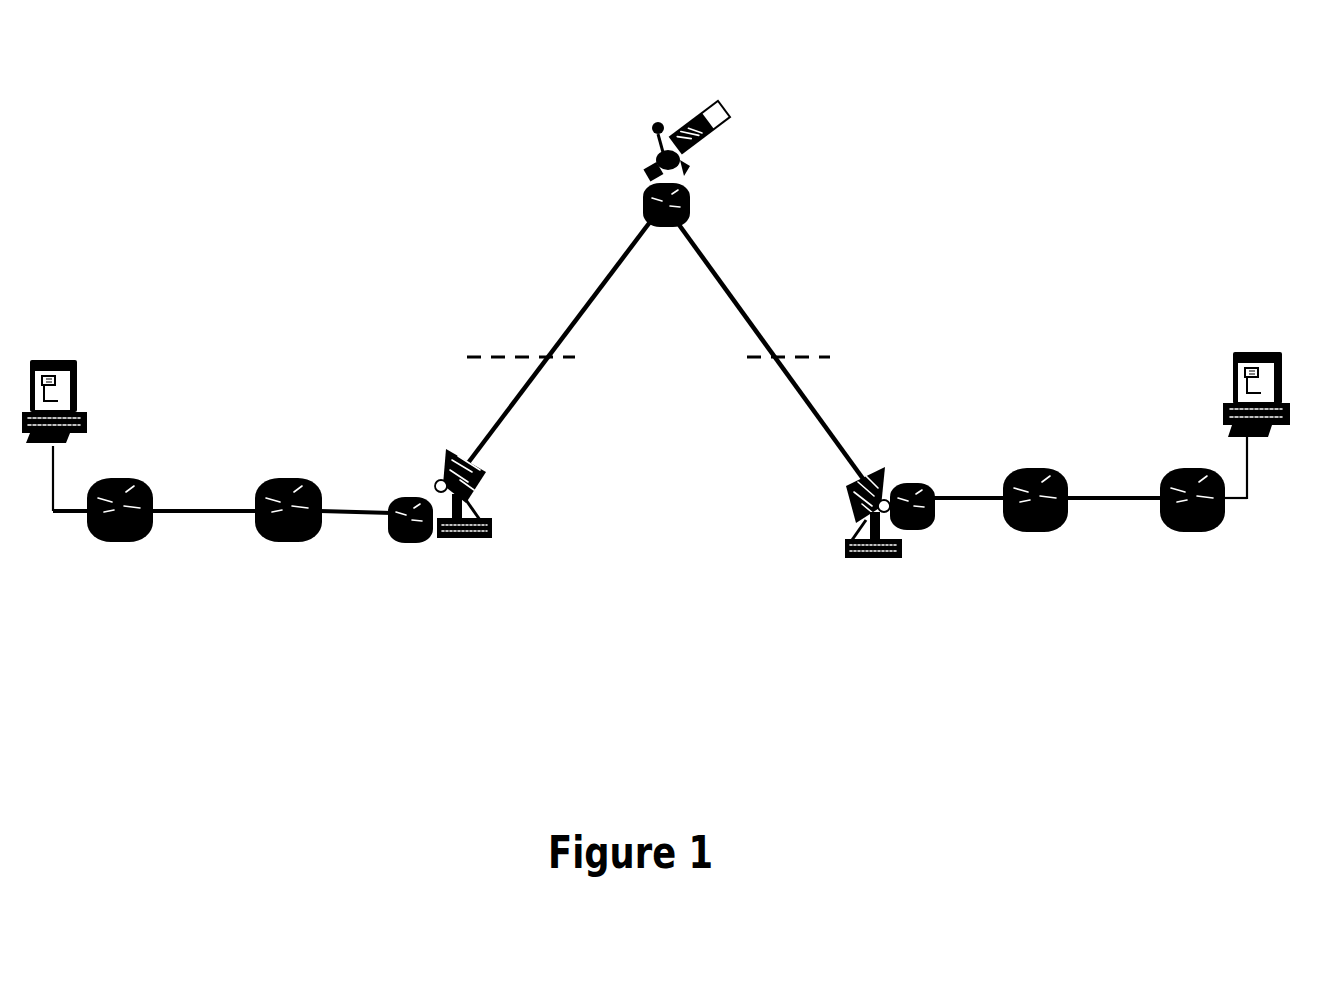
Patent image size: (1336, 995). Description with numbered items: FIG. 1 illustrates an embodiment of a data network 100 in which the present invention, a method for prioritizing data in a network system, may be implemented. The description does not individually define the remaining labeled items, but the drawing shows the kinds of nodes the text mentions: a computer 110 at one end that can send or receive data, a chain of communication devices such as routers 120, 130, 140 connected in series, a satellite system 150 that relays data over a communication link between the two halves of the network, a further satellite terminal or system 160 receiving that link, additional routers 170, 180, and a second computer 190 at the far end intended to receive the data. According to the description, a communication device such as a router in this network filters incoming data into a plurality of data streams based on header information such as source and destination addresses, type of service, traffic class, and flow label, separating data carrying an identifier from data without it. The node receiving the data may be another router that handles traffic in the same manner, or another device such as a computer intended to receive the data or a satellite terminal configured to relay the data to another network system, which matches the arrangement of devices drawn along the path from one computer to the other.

The data network 100 is at (1241, 97).
The first computer / host 110 is at (60, 358).
The router 120 is at (130, 543).
The router 130 is at (280, 478).
The router with satellite ground station 140 is at (430, 543).
The satellite with router 150 is at (668, 118).
The satellite ground station with router 160 is at (897, 558).
The router 170 is at (1035, 467).
The router 180 is at (1200, 533).
The second computer / host 190 is at (1255, 352).